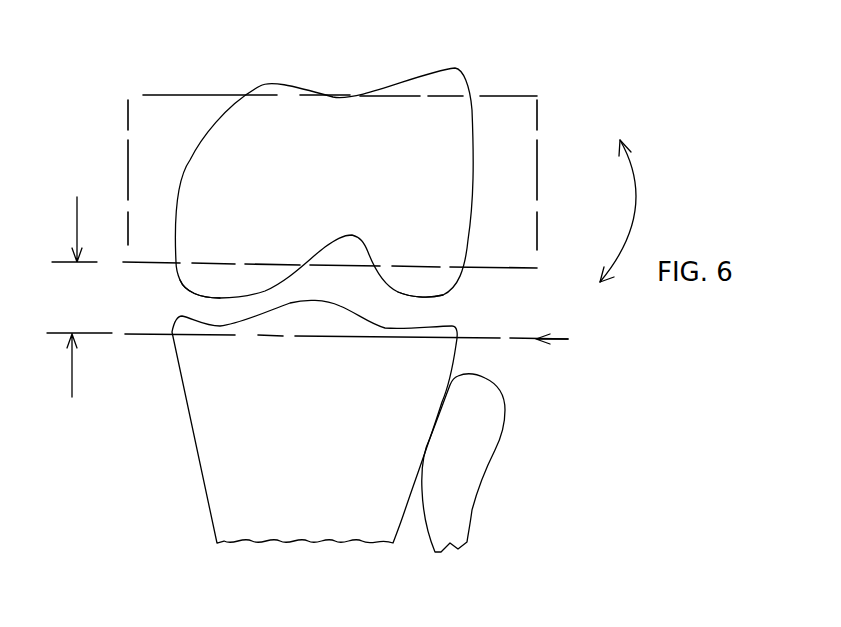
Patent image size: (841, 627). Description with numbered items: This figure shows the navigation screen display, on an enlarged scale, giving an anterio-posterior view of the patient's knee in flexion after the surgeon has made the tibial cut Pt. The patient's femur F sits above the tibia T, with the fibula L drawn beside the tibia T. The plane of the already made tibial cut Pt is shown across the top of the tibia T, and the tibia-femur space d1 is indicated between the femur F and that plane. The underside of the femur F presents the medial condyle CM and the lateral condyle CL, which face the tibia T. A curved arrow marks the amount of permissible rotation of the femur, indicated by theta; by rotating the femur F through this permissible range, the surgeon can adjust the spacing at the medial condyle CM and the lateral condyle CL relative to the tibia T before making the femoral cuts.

The femur F is at (332, 140).
The medial condyle CM is at (205, 280).
The lateral condyle CL is at (427, 283).
The tibia T is at (210, 424).
The fibula L is at (468, 453).
The tibial cut Pt is at (518, 342).
The tibia-femur space d1 is at (72, 297).
The permissible rotation of the femur theta is at (630, 228).